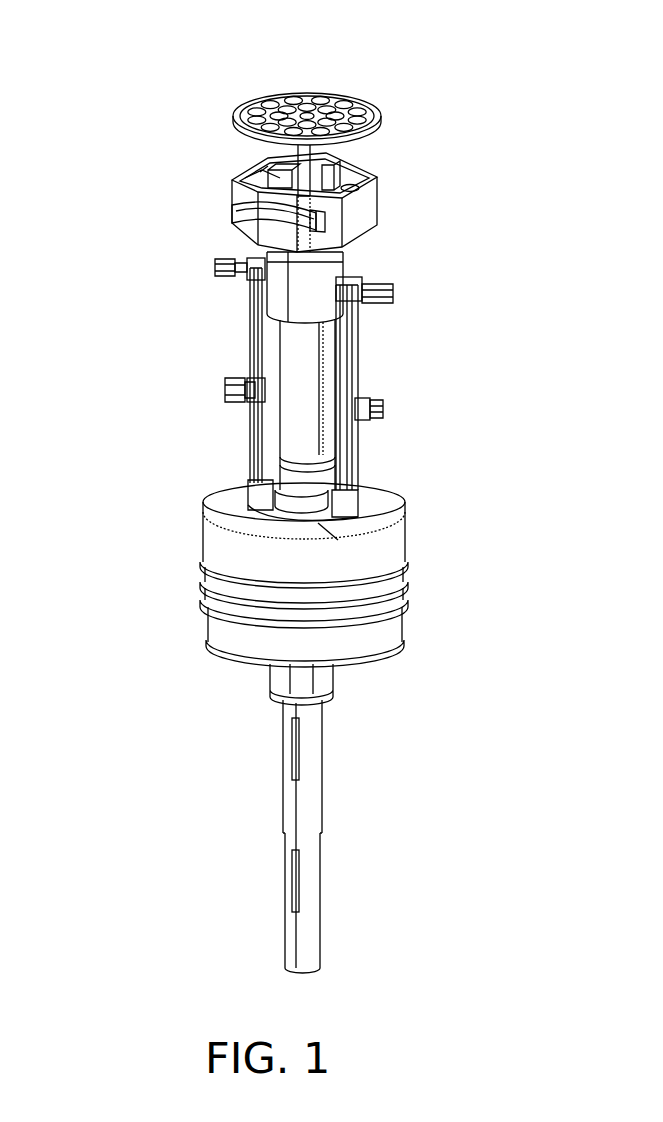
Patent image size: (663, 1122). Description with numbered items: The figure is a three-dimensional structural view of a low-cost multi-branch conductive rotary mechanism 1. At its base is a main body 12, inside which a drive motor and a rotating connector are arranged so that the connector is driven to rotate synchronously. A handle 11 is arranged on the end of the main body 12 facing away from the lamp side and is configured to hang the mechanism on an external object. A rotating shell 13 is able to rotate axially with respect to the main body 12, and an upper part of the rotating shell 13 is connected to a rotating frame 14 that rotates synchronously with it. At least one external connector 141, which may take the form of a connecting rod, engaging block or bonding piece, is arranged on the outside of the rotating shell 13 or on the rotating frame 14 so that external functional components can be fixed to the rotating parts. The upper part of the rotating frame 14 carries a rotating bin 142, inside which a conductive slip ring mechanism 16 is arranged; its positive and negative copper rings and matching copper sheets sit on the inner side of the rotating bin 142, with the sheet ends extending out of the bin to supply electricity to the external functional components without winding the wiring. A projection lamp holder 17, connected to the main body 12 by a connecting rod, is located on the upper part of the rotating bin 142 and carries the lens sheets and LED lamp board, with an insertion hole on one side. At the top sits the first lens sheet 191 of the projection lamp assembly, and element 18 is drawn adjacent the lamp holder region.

The multi-branch conductive rotary mechanism 1 is at (313, 38).
The handle 11 is at (300, 820).
The main body 12 is at (228, 625).
The rotating shell 13 is at (227, 502).
The rotating frame 14 is at (253, 358).
The external connector 141 is at (380, 407).
The rotating bin 142 is at (312, 305).
The conductive slip ring mechanism 16 is at (343, 273).
The projection lamp holder 17 is at (375, 208).
The latch 18 is at (233, 207).
The first lens sheet 191 is at (233, 118).